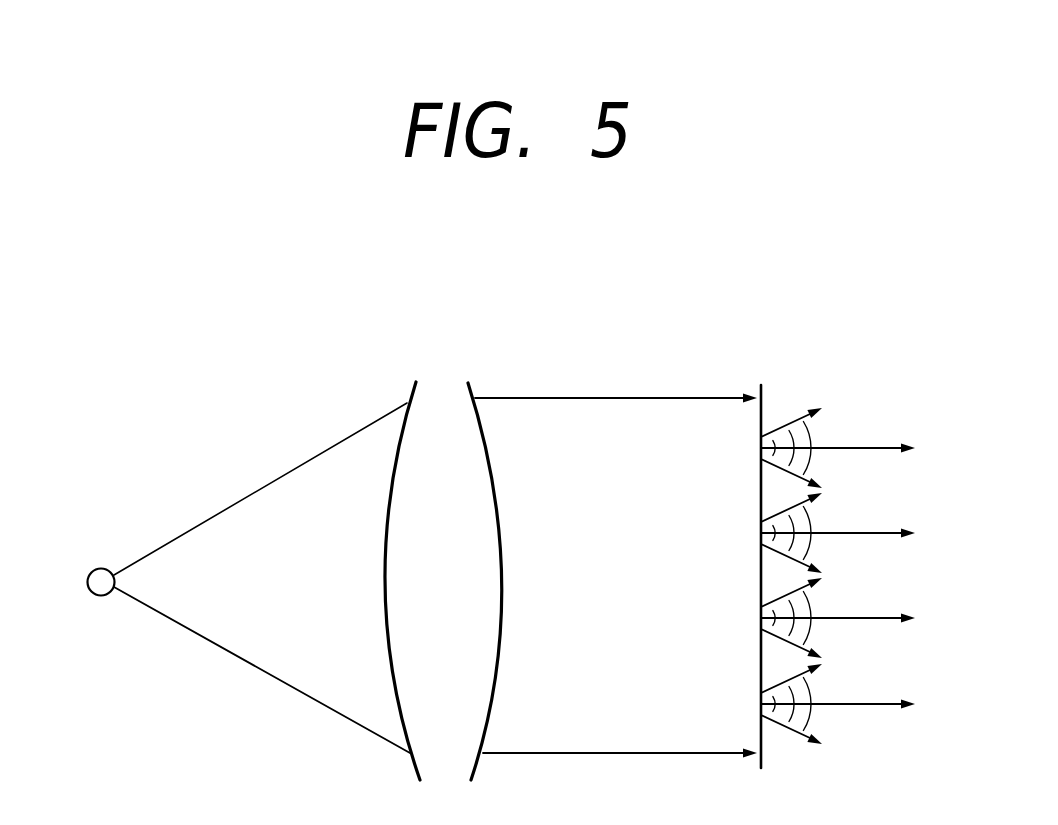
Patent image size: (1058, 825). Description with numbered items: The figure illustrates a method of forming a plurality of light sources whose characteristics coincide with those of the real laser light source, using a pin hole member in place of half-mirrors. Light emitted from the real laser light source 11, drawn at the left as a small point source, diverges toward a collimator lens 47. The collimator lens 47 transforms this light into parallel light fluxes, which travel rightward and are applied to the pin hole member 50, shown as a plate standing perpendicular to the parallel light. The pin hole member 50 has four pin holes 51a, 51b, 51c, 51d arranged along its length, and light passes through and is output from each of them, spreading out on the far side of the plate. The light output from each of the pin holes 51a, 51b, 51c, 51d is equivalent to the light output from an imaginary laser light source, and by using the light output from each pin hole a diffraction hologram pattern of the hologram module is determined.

The real laser light source 11 is at (93, 576).
The collimator lens 47 is at (472, 387).
The pin hole member 50 is at (770, 389).
The pin hole 51a is at (758, 447).
The pin hole 51b is at (758, 533).
The pin hole 51c is at (758, 618).
The pin hole 51d is at (758, 704).